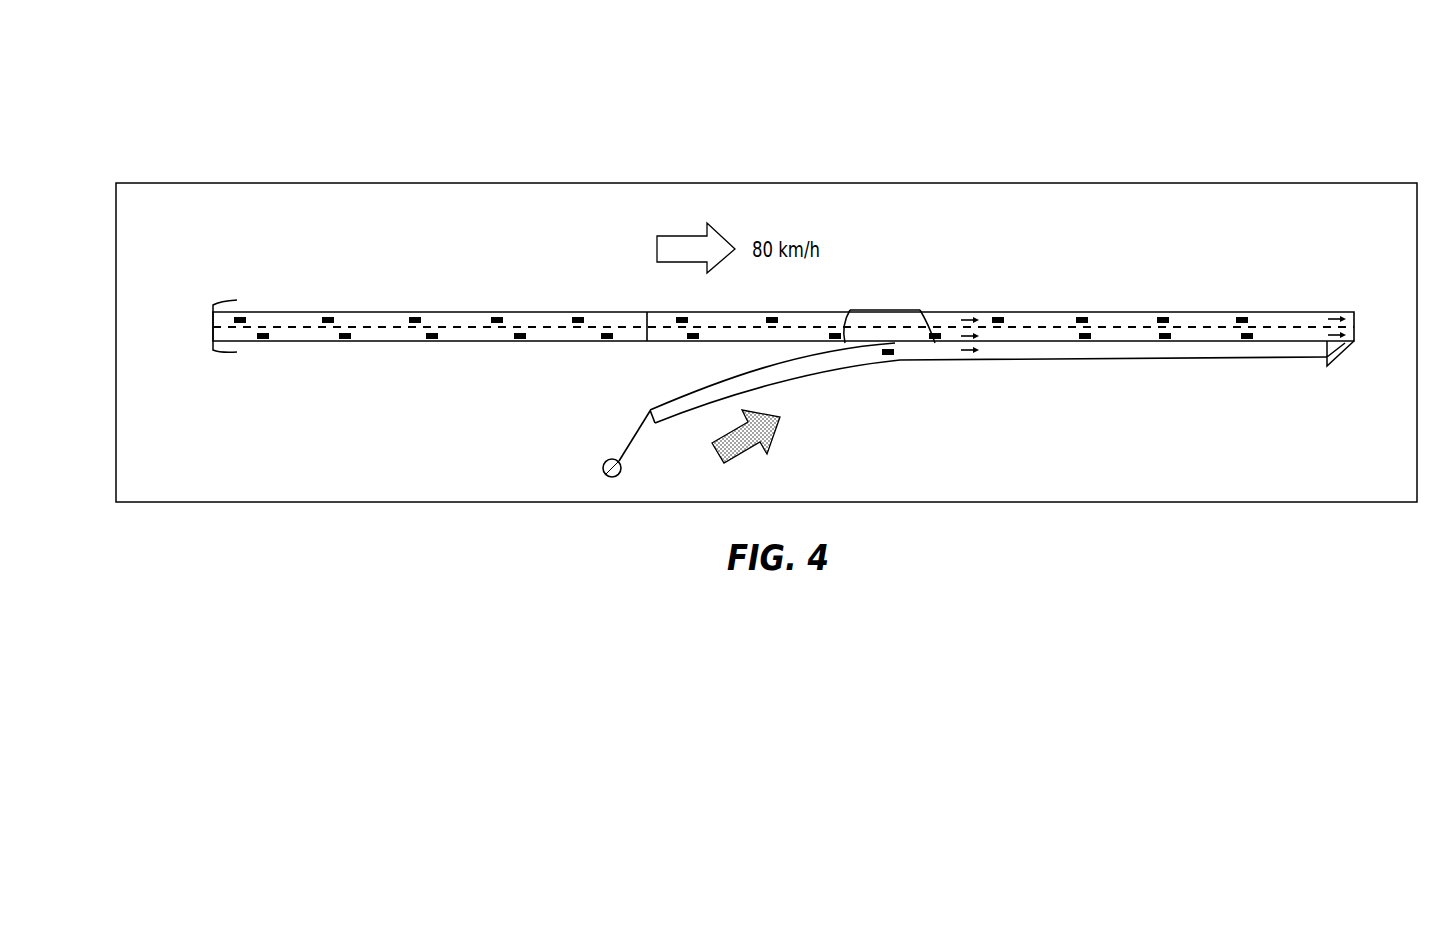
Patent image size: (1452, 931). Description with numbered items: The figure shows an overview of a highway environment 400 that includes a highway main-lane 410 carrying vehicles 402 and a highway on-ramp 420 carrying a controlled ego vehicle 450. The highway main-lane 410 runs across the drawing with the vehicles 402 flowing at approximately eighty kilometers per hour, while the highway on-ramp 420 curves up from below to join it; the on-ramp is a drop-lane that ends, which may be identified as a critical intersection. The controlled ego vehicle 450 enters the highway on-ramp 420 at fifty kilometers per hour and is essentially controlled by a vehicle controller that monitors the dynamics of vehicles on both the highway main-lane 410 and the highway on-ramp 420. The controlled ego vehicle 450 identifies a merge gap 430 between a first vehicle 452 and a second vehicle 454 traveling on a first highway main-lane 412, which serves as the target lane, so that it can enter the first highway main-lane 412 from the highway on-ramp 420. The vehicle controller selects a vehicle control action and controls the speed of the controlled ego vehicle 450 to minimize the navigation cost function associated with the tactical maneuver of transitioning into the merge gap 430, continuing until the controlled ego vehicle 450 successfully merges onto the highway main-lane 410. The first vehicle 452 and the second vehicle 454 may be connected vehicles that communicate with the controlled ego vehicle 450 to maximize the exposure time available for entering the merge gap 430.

The highway environment 400 is at (210, 108).
The vehicles 402 is at (1083, 316).
The highway main-lane 410 is at (212, 327).
The first highway main-lane 412 is at (1354, 343).
The highway on-ramp 420 is at (677, 413).
The merge gap 430 is at (885, 310).
The controlled ego vehicle 450 is at (890, 357).
The first vehicle 452 is at (845, 343).
The second vehicle 454 is at (935, 343).